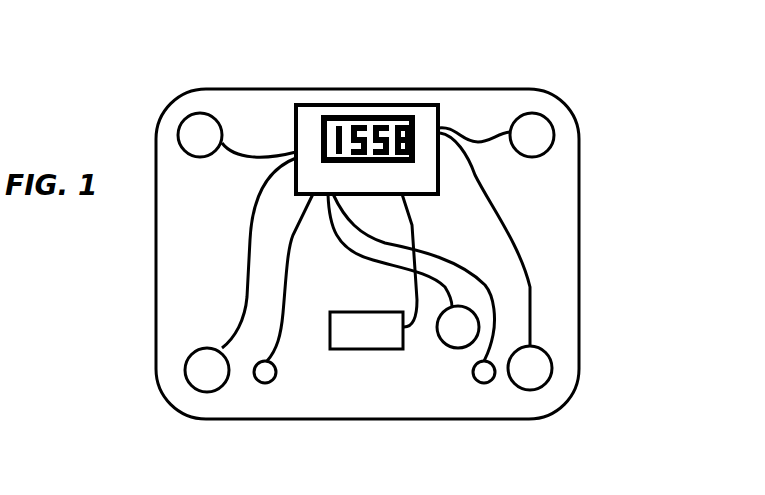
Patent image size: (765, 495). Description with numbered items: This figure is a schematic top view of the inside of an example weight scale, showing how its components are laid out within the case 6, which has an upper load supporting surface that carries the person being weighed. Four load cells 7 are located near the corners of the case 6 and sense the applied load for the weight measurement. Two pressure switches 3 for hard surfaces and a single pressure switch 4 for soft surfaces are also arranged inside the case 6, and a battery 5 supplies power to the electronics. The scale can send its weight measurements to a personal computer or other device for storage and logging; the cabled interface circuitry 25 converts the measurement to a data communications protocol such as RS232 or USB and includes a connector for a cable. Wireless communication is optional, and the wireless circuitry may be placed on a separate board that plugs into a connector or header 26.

The pressure switch for hard surfaces 3 is at (257, 395).
The pressure switch for soft surfaces 4 is at (449, 356).
The battery 5 is at (351, 349).
The case 6 is at (580, 254).
The load cells 7 is at (173, 116).
The cabled interface circuitry 25 is at (347, 96).
The connector or header 26 is at (434, 92).